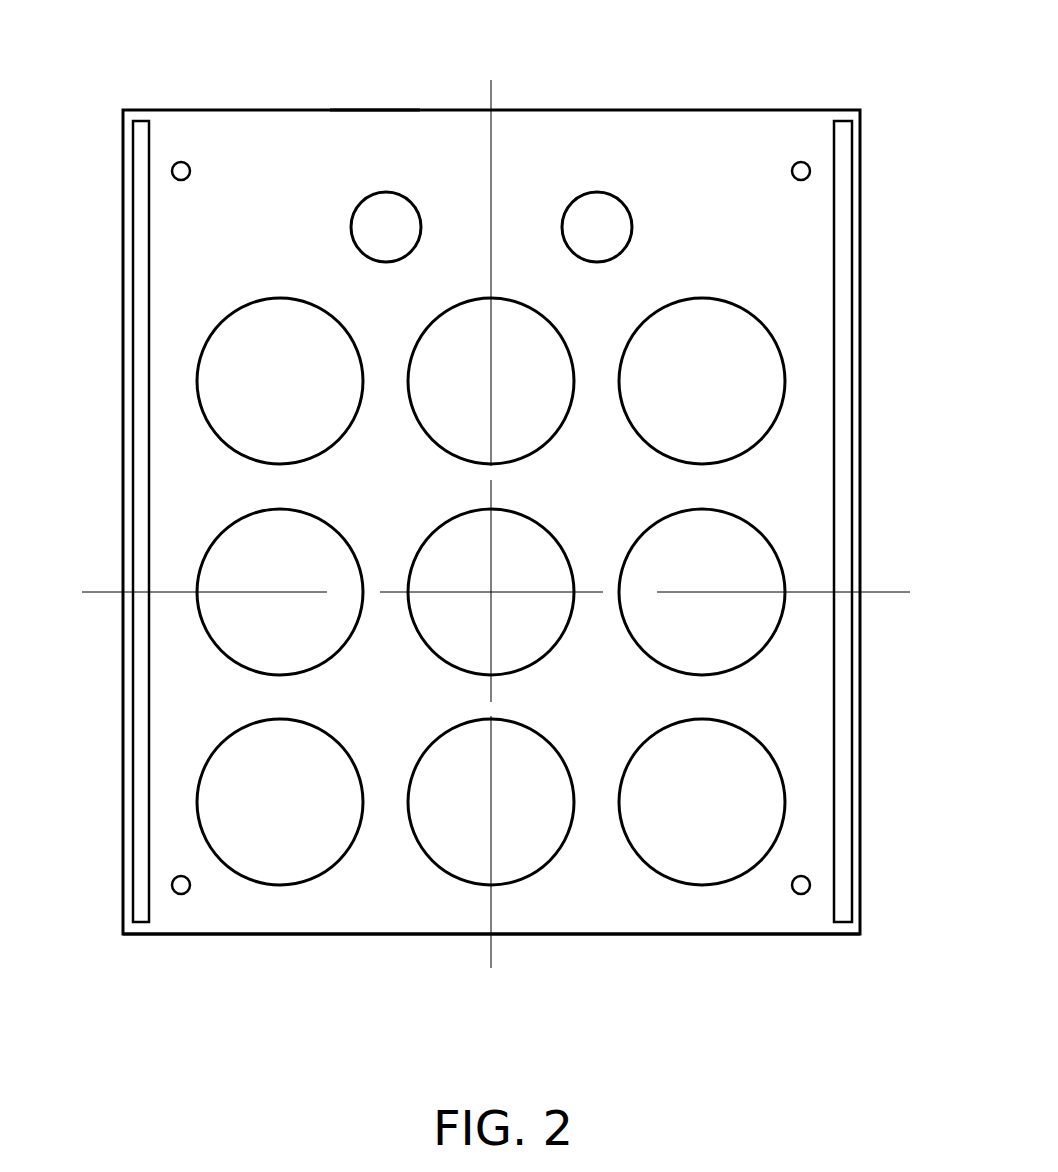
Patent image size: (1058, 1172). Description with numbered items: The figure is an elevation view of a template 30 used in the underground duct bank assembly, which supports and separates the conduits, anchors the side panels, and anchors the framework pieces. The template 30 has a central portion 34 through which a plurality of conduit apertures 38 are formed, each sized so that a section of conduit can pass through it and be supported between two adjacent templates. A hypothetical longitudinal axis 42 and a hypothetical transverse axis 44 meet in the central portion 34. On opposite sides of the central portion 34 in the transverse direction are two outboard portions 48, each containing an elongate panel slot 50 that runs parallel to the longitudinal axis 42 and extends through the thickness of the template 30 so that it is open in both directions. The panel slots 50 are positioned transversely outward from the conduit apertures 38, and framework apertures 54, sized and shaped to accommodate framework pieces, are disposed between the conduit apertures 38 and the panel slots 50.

The template 30 is at (491, 477).
The central portion 34 is at (380, 58).
The conduit apertures 38 is at (577, 452).
The longitudinal axis 42 is at (546, 568).
The transverse axis 44 is at (521, 552).
The outboard portion 48 is at (483, 992).
The panel slot 50 is at (501, 521).
The framework apertures 54 is at (498, 450).